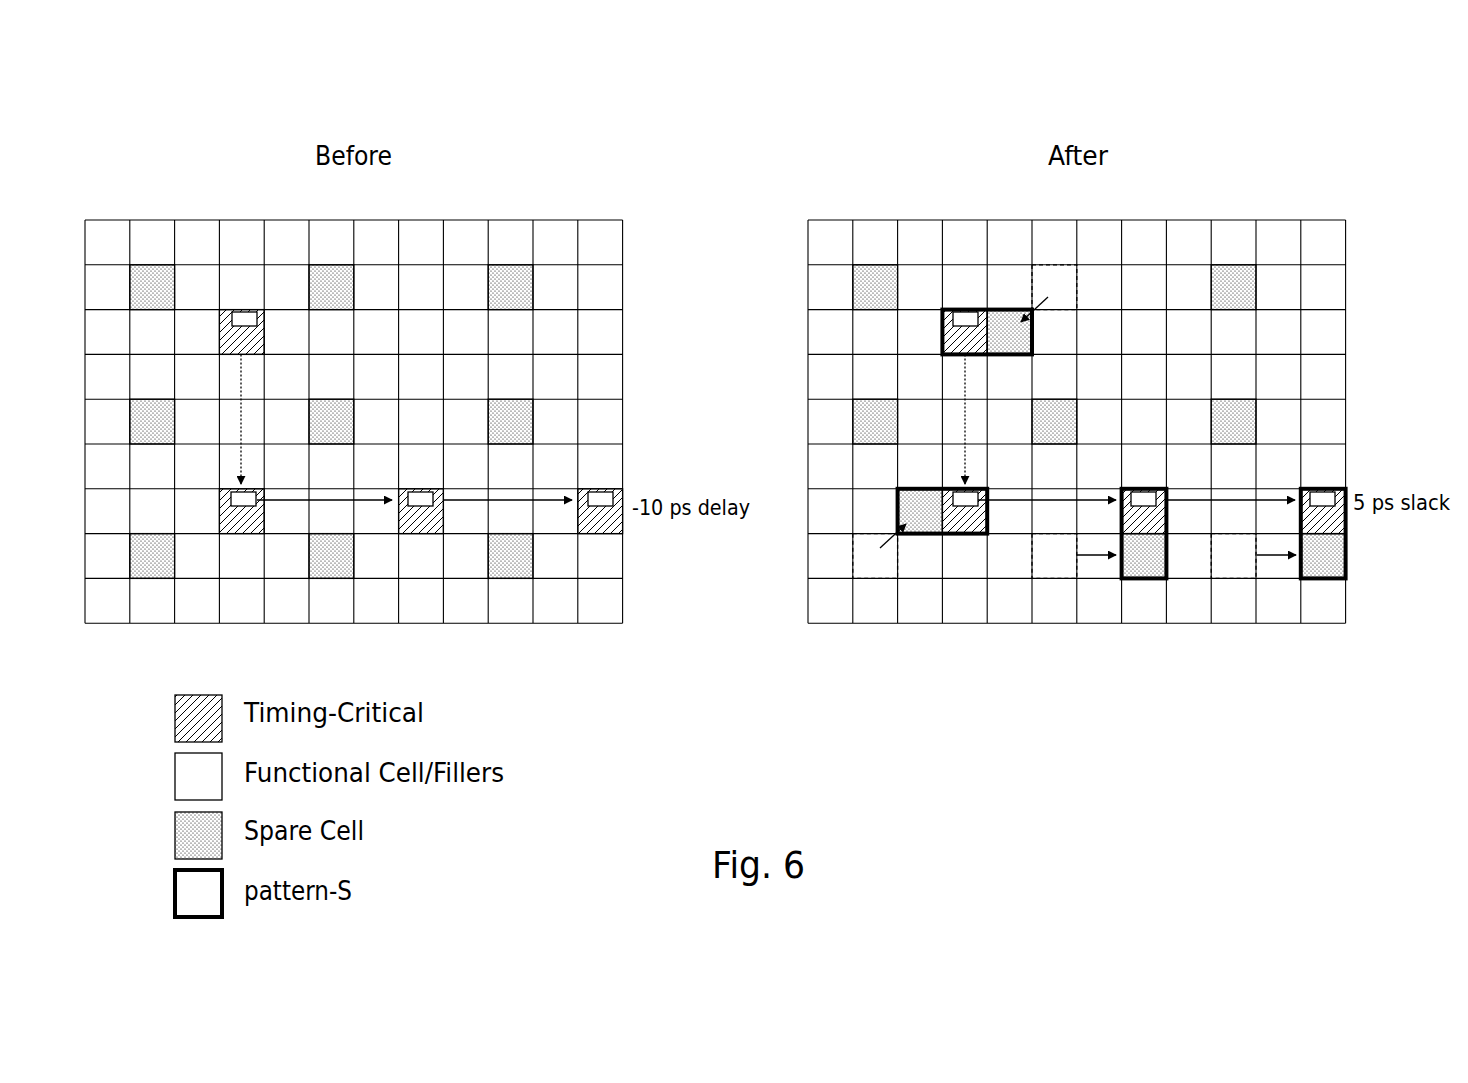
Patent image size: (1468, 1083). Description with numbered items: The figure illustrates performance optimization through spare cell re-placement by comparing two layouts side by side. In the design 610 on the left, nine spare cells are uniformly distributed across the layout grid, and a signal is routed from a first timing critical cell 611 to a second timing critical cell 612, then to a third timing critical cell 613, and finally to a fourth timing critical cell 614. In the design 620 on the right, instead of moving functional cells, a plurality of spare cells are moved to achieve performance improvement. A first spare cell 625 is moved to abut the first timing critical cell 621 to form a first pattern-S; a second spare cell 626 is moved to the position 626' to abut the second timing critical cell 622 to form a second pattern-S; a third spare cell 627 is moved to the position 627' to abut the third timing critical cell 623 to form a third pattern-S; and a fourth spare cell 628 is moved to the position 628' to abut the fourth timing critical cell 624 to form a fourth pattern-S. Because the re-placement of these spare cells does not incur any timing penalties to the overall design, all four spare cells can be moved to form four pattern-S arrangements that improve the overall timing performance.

The design 610 is at (433, 98).
The first timing critical cell 611 is at (219, 332).
The second timing critical cell 612 is at (241, 527).
The third timing critical cell 613 is at (442, 488).
The fourth timing critical cell 614 is at (617, 527).
The design 620 is at (1157, 98).
The first timing critical cell 621 is at (942, 332).
The second timing critical cell 622 is at (962, 540).
The third timing critical cell 623 is at (1166, 488).
The fourth timing critical cell 624 is at (1345, 525).
The first spare cell 625 is at (325, 275).
The second spare cell 626 is at (514, 606).
The second spare cell moved position 626' is at (841, 498).
The third spare cell 627 is at (712, 605).
The third spare cell moved position 627' is at (1147, 582).
The fourth spare cell 628 is at (892, 605).
The fourth spare cell moved position 628' is at (1362, 534).